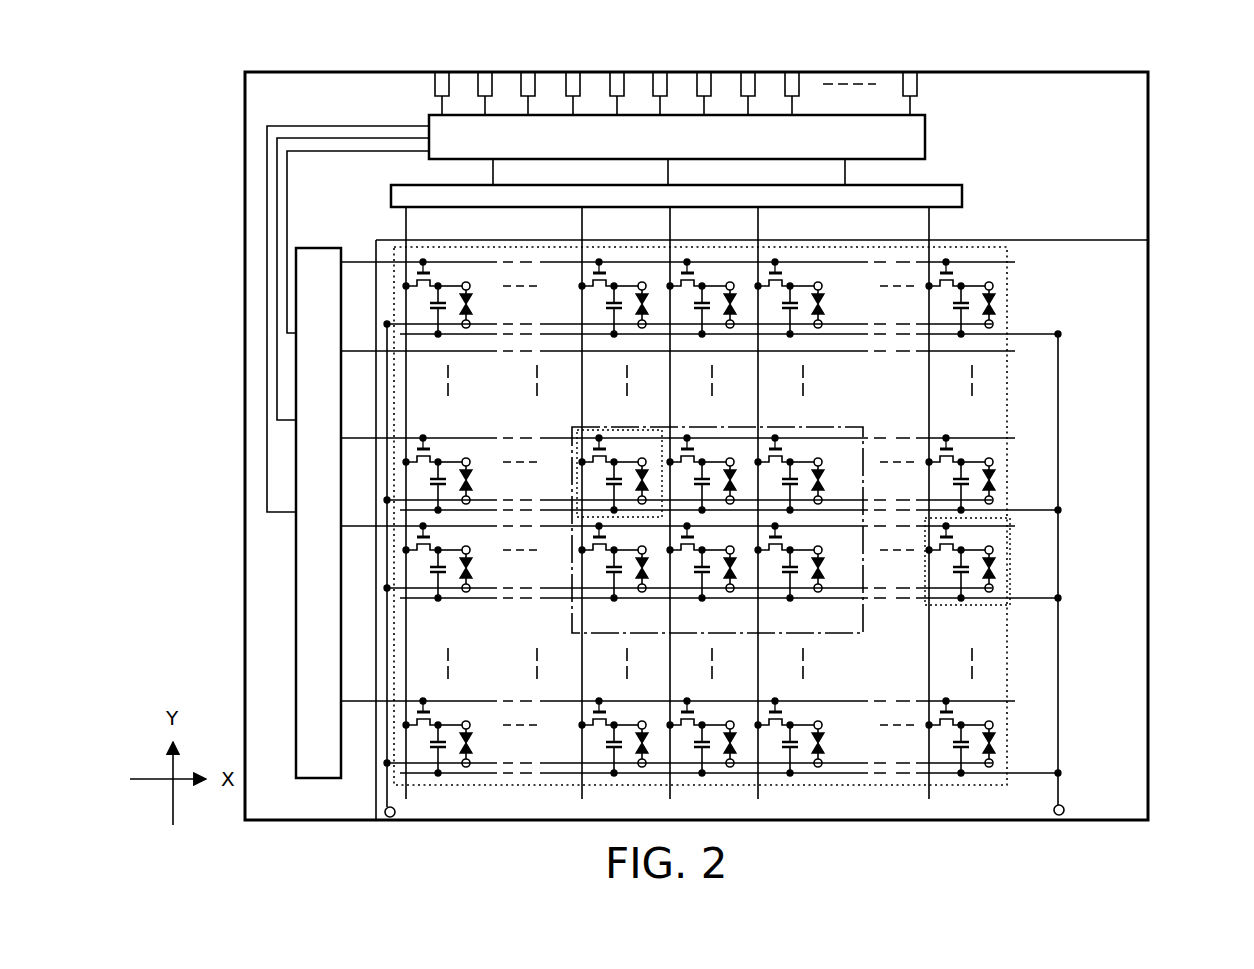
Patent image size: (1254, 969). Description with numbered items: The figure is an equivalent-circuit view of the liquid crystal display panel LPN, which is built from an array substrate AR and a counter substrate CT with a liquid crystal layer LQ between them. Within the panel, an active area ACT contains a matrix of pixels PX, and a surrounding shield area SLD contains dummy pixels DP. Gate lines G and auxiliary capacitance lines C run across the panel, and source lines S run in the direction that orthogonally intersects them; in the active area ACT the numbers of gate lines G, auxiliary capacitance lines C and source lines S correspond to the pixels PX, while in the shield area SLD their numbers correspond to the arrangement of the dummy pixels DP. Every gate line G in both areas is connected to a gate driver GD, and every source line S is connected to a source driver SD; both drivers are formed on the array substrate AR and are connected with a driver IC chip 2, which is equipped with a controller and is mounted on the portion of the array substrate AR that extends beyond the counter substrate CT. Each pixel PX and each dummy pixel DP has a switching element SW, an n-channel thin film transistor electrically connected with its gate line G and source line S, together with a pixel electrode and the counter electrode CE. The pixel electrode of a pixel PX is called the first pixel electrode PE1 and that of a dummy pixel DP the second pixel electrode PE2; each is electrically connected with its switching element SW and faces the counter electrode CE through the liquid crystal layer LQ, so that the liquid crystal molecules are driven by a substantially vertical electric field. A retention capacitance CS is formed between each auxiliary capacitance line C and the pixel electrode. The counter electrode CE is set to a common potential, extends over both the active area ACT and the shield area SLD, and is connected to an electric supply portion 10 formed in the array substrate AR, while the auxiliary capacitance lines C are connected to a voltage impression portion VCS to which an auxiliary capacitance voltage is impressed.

The liquid crystal display panel LPN is at (1151, 107).
The array substrate AR is at (318, 821).
The driver IC chip 2 is at (927, 138).
The source driver SD is at (964, 193).
The gate driver GD is at (296, 632).
The counter substrate CT is at (1112, 240).
The shield area SLD is at (1001, 366).
The source line S is at (408, 228).
The gate line G is at (358, 261).
The auxiliary capacitance line C is at (1034, 331).
The electric supply portion 10 is at (393, 817).
The voltage impression portion VCS is at (1064, 806).
The active area ACT is at (883, 427).
The pixel PX is at (577, 427).
The dummy pixel DP is at (1010, 617).
The switching element SW is at (581, 453).
The retention capacitance CS is at (599, 483).
The first pixel electrode PE1 is at (641, 457).
The second pixel electrode PE2 is at (995, 548).
The liquid crystal layer LQ is at (648, 475).
The counter electrode CE is at (641, 504).